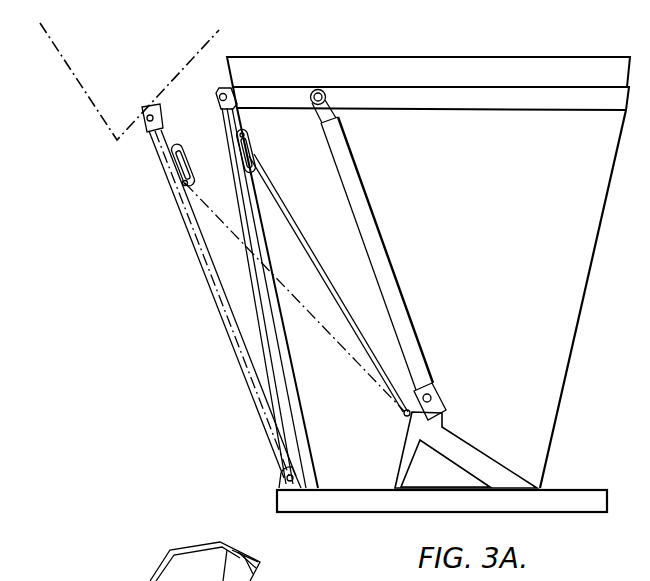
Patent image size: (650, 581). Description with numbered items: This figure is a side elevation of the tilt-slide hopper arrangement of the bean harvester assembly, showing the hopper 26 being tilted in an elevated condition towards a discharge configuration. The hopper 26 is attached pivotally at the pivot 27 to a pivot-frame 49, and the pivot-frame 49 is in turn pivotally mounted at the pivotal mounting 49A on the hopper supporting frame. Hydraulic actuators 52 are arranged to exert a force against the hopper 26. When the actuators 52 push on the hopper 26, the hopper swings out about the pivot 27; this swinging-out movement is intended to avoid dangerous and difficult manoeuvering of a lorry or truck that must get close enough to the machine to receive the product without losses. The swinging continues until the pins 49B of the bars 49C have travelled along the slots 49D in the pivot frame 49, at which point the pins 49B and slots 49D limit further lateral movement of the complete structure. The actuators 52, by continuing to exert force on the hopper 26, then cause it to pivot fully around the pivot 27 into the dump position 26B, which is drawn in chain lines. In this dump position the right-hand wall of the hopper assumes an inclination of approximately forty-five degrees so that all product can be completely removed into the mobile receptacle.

The hopper 26 is at (484, 253).
The dump position 26B is at (68, 72).
The pivot 27 is at (219, 97).
The pivot-frame 49 is at (262, 343).
The pivotal mounting 49A is at (283, 474).
The pins 49B is at (250, 135).
The bars 49C is at (352, 315).
The slots 49D is at (252, 150).
The hydraulic actuators 52 is at (377, 228).